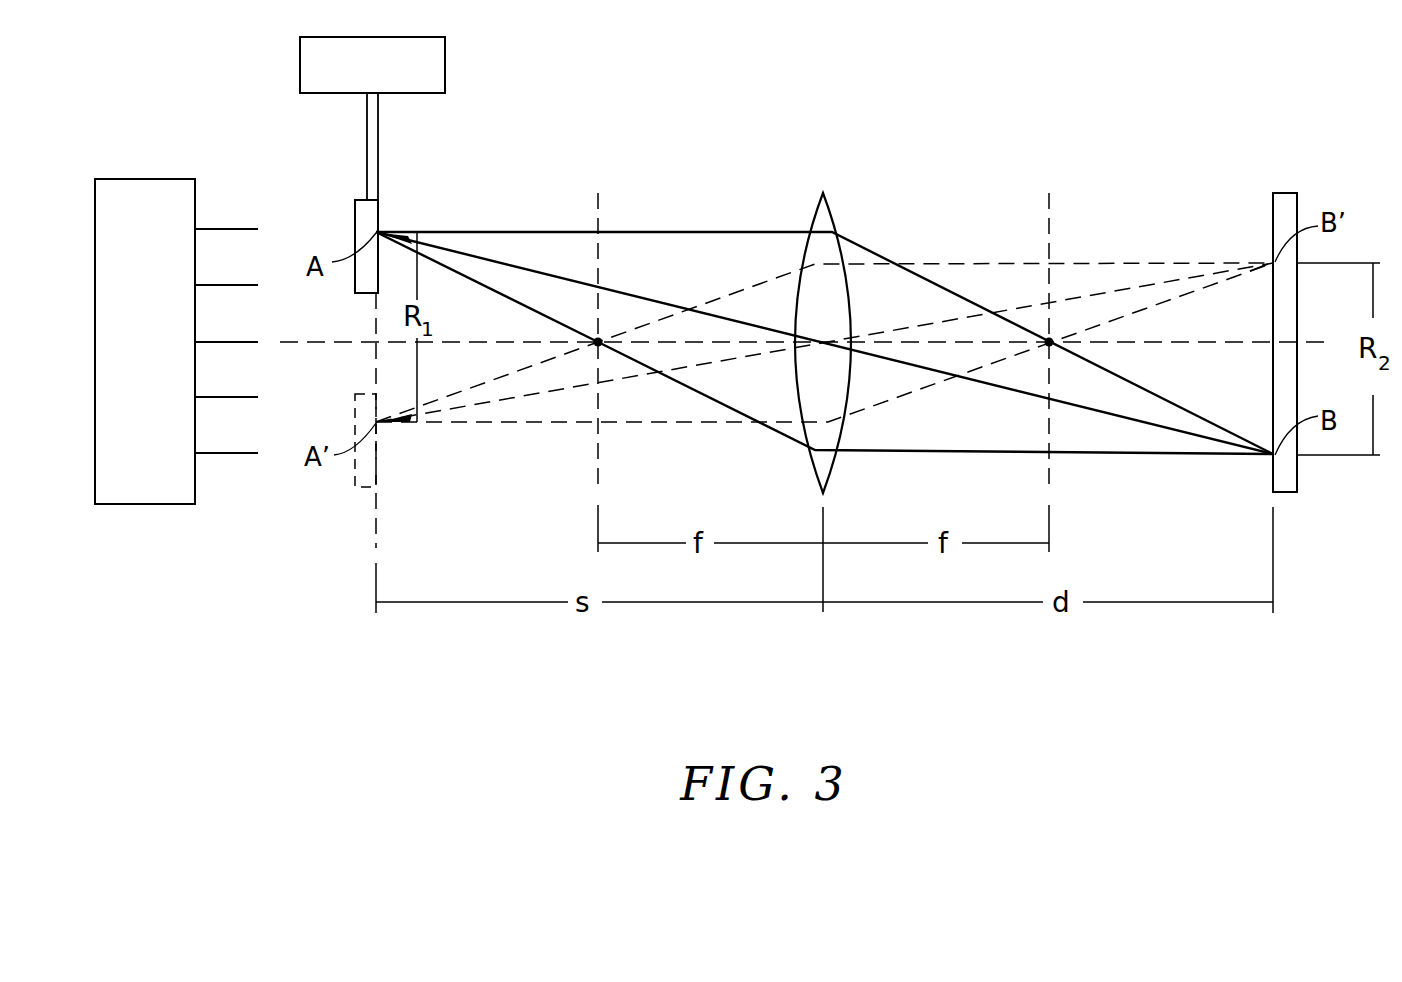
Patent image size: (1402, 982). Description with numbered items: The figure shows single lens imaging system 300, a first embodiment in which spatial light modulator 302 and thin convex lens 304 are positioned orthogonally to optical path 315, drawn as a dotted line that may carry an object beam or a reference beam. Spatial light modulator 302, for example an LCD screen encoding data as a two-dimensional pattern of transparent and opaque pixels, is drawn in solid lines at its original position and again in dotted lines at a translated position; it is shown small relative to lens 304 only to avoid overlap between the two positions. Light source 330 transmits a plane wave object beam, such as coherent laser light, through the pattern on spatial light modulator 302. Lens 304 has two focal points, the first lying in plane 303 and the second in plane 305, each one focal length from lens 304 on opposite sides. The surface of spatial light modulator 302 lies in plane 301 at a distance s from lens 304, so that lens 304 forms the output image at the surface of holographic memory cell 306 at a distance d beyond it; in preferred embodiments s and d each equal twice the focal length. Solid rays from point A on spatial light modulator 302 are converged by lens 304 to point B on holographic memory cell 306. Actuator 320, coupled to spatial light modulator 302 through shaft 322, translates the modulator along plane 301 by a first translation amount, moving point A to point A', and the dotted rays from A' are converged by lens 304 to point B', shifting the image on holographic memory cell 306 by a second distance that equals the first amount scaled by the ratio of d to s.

The single lens imaging system 300 is at (460, 676).
The plane 301 is at (376, 545).
The spatial light modulator 302 is at (355, 215).
The plane 303 is at (598, 200).
The thin convex lens 304 is at (838, 216).
The plane 305 is at (1049, 222).
The holographic memory cell 306 is at (1273, 205).
The optical path 315 is at (1164, 345).
The actuator 320 is at (445, 66).
The shaft 322 is at (378, 128).
The light source 330 is at (146, 179).